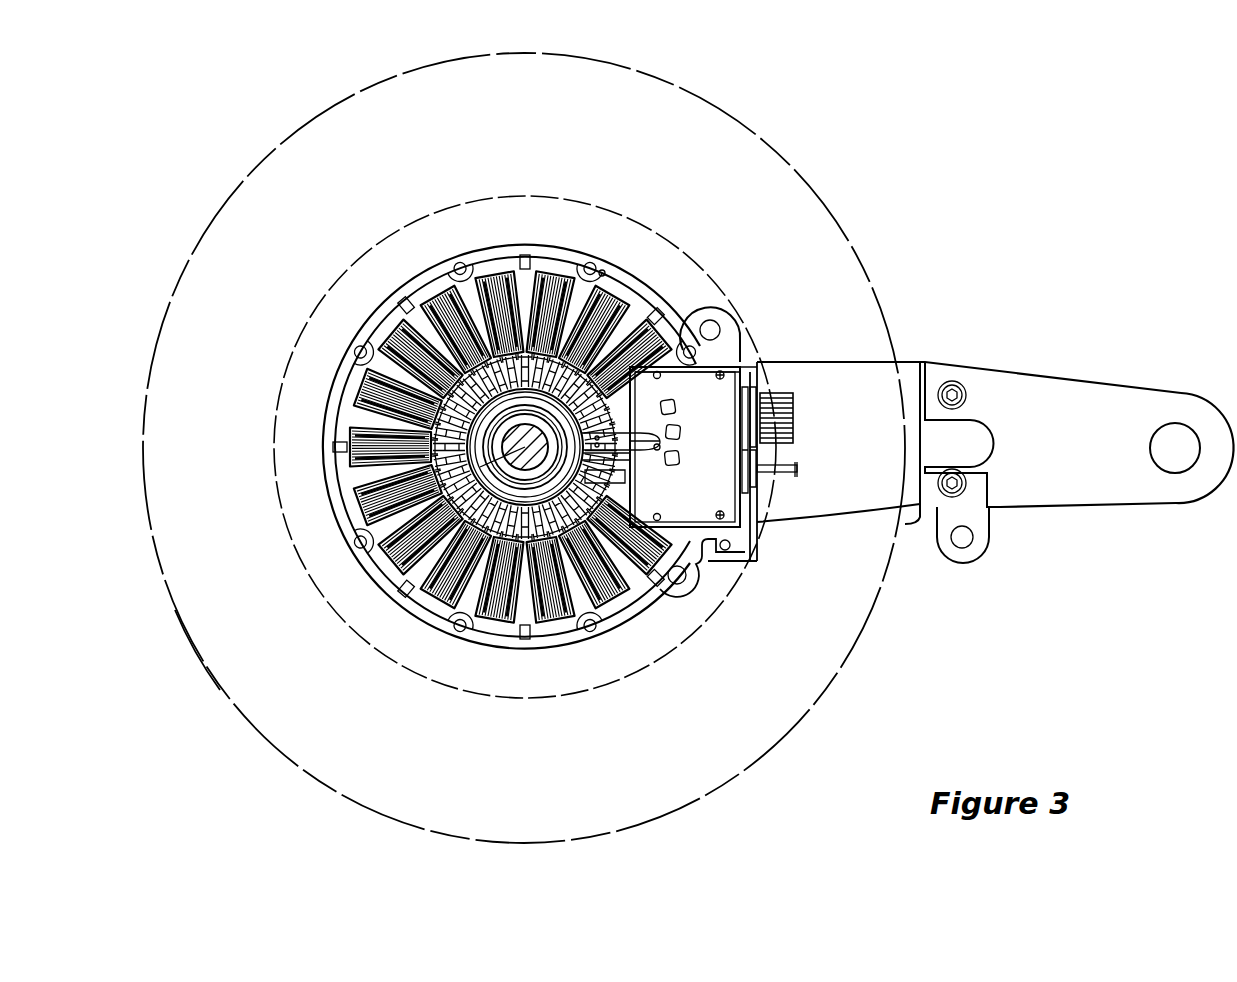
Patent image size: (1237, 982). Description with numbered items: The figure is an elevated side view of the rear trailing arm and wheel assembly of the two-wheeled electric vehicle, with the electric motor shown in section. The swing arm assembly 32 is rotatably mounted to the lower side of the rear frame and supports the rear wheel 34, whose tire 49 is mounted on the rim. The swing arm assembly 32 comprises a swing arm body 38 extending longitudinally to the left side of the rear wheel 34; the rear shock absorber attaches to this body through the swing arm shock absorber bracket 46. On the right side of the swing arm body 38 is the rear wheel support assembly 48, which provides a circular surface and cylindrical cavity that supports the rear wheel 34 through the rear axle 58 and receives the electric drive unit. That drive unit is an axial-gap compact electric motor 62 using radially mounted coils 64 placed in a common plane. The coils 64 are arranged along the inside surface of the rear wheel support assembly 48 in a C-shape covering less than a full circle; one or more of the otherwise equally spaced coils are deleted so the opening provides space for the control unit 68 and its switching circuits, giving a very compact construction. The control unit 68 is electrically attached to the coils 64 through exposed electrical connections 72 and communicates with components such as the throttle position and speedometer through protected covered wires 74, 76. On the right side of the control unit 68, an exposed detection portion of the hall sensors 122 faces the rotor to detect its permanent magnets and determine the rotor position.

The swing arm assembly 32 is at (1070, 363).
The rear wheel 34 is at (283, 755).
The swing arm body 38 is at (1090, 498).
The swing arm shock absorber bracket 46 is at (962, 560).
The rear wheel support assembly 48 is at (493, 647).
The tire 49 is at (218, 636).
The rear axle 58 is at (417, 580).
The compact electric motor 62 is at (558, 633).
The coils 64 is at (617, 293).
The control unit 68 is at (697, 515).
The exposed electrical connections 72 is at (580, 240).
The covered wire 74 is at (790, 418).
The covered wire 76 is at (786, 477).
The hall sensors 122 is at (713, 368).